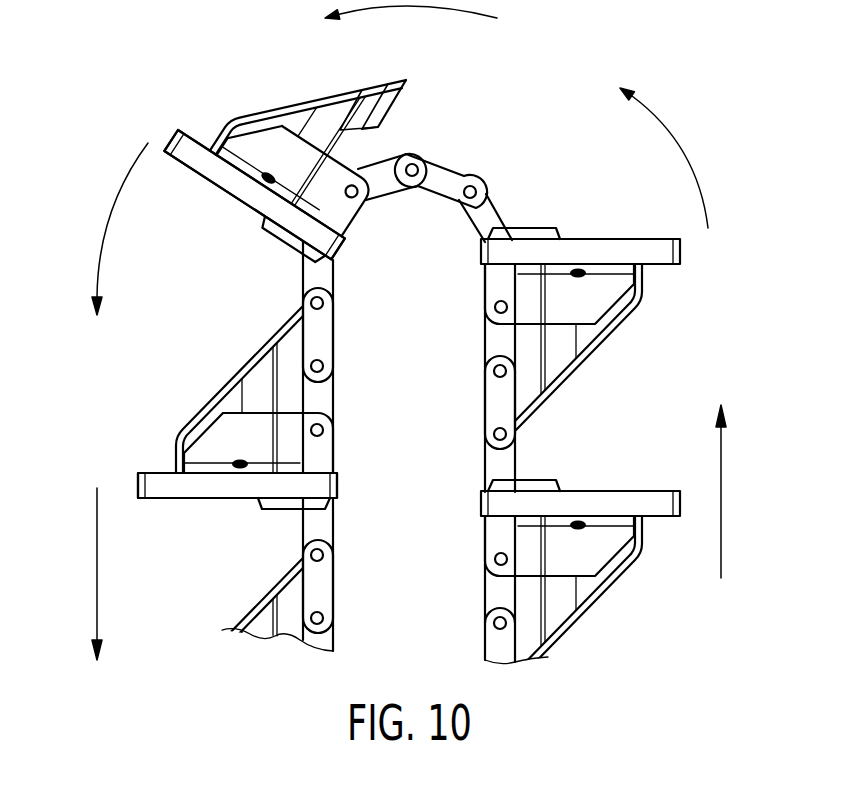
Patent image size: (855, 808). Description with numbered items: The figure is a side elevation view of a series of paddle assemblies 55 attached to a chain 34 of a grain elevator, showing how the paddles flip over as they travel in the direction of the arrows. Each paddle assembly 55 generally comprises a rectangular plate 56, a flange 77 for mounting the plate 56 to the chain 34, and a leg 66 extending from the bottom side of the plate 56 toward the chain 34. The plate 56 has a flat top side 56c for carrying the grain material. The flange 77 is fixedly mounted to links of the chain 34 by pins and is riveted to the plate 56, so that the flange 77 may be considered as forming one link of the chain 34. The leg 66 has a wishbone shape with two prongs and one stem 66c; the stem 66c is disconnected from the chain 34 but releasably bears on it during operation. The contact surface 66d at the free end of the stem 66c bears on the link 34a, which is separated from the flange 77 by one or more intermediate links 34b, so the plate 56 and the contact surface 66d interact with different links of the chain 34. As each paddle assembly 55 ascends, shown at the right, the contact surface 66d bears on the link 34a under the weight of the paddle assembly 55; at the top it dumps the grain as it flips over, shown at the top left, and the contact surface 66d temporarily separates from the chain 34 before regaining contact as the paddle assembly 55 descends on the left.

The chain 34 is at (330, 637).
The link 34a is at (447, 182).
The intermediate link 34b is at (383, 186).
The paddle assembly 55 is at (211, 177).
The plate 56 is at (162, 487).
The flat top side 56c is at (231, 199).
The leg 66 is at (258, 370).
The stem 66c is at (372, 90).
The contact surface 66d is at (383, 106).
The flange 77 is at (318, 457).